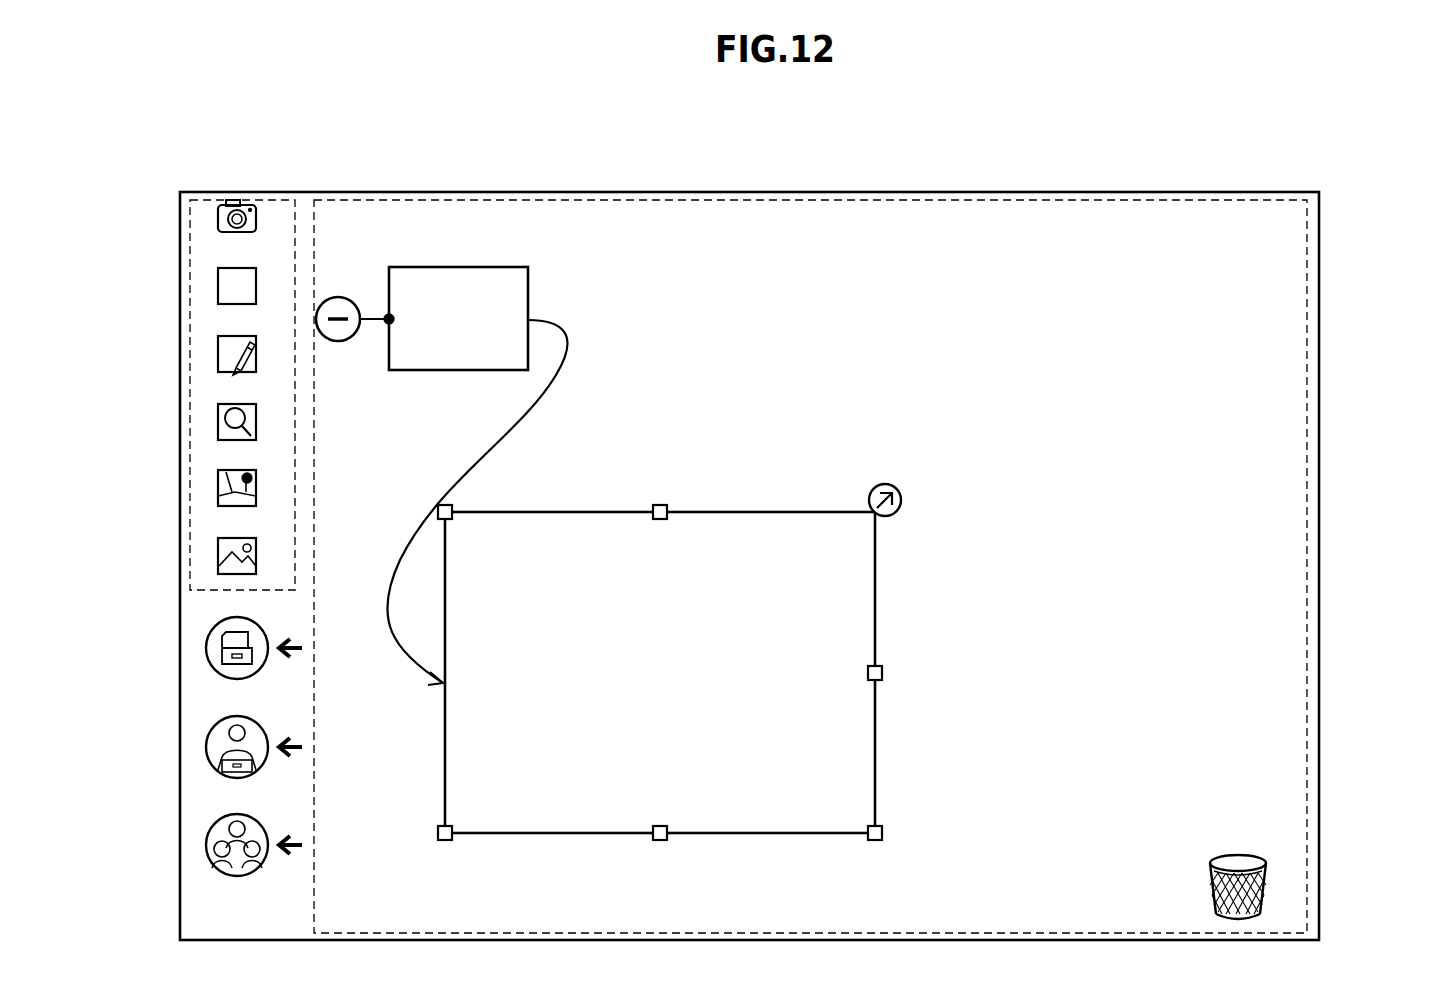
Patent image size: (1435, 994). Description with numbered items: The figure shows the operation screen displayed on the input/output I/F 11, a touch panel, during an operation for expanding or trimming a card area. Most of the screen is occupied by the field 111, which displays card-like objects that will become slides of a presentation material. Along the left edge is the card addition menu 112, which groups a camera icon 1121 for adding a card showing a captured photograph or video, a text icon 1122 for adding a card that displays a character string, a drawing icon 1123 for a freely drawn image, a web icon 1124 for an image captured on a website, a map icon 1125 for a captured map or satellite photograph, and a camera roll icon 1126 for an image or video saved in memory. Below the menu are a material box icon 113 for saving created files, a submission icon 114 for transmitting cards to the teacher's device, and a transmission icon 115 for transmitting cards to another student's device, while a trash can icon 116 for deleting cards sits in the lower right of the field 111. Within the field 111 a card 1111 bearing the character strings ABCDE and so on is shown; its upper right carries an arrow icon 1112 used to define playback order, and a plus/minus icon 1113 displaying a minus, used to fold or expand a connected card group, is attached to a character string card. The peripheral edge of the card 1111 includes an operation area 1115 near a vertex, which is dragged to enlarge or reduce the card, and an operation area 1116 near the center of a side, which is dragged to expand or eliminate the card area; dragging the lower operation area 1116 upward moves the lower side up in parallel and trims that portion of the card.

The input/output I/F 11 is at (1319, 285).
The field 111 is at (1306, 455).
The card addition menu 112 is at (279, 200).
The material box icon 113 is at (206, 648).
The submission icon 114 is at (206, 747).
The transmission icon 115 is at (206, 845).
The trash can icon 116 is at (1266, 878).
The card 1111 is at (453, 268).
The arrow icon 1112 is at (885, 484).
The plus/minus icon 1113 is at (330, 290).
The operation area 1115 is at (882, 833).
The operation area 1116 is at (660, 505).
The camera icon 1121 is at (218, 214).
The text icon 1122 is at (218, 284).
The drawing icon 1123 is at (218, 352).
The web icon 1124 is at (218, 420).
The map icon 1125 is at (218, 488).
The camera roll icon 1126 is at (218, 556).